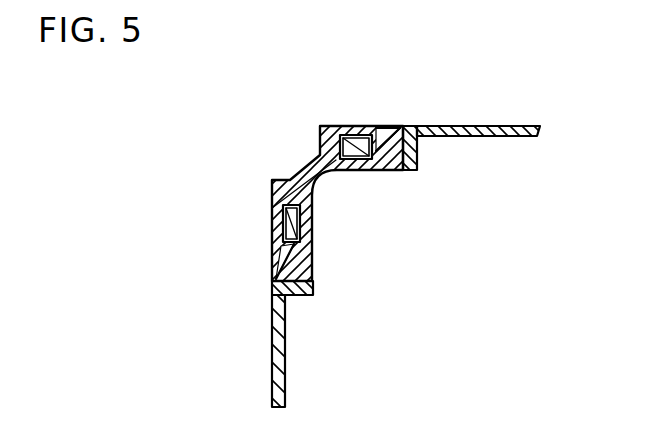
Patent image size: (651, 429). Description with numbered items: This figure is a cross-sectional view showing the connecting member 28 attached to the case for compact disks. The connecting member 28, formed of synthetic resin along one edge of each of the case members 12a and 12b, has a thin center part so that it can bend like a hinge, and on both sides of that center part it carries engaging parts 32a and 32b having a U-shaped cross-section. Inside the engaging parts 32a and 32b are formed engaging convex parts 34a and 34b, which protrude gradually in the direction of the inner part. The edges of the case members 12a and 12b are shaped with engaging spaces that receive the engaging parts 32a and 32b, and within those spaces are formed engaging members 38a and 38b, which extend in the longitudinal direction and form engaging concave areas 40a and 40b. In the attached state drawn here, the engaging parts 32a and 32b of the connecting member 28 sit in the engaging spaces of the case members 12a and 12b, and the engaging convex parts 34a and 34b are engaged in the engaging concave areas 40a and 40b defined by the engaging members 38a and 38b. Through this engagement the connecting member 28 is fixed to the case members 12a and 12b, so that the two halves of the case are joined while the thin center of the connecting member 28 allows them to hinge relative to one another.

The case member 12a is at (495, 128).
The case member 12b is at (279, 356).
The connecting member 28 is at (323, 126).
The engaging part 32a is at (385, 126).
The engaging part 32b is at (271, 210).
The engaging convex part 34a is at (405, 126).
The engaging convex part 34b is at (273, 263).
The engaging member 38a is at (357, 135).
The engaging member 38b is at (272, 236).
The engaging concave area 40a is at (393, 145).
The engaging concave area 40b is at (291, 266).